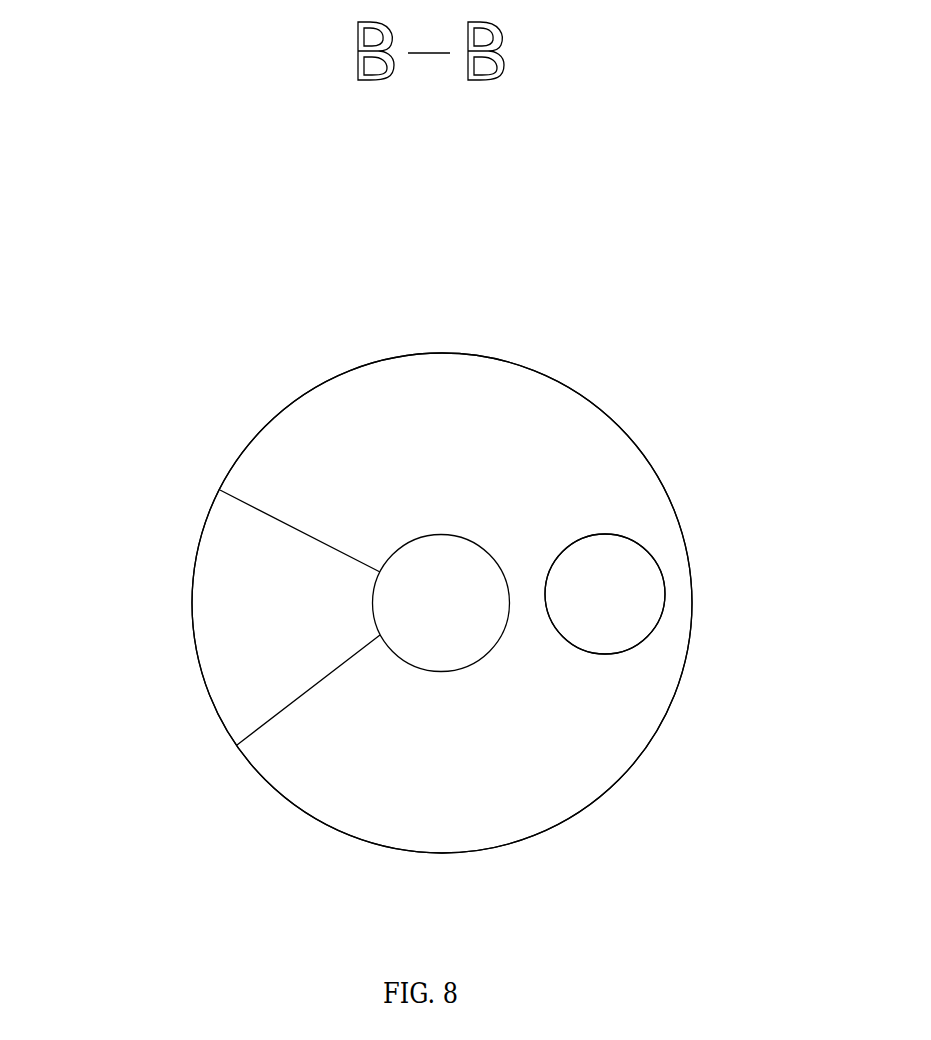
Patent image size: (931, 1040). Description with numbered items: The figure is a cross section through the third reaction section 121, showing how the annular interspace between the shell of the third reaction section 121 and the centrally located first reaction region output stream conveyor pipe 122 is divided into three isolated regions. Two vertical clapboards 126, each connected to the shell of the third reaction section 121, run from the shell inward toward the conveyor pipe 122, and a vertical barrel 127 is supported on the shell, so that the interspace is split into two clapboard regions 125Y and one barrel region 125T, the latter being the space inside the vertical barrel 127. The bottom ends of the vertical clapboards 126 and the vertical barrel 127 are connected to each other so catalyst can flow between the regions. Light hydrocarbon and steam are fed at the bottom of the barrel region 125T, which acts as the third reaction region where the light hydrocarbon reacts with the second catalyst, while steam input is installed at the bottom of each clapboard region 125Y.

The third reaction section 121 is at (552, 378).
The first reaction region output stream conveyor pipe 122 is at (442, 642).
The barrel region 125T is at (625, 618).
The clapboard region 125Y is at (227, 548).
The vertical clapboard 126 is at (288, 703).
The vertical barrel 127 is at (615, 533).